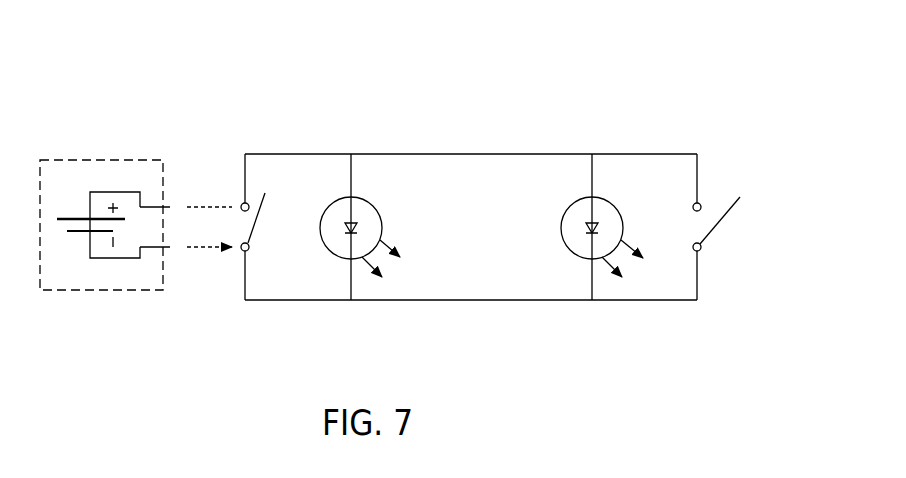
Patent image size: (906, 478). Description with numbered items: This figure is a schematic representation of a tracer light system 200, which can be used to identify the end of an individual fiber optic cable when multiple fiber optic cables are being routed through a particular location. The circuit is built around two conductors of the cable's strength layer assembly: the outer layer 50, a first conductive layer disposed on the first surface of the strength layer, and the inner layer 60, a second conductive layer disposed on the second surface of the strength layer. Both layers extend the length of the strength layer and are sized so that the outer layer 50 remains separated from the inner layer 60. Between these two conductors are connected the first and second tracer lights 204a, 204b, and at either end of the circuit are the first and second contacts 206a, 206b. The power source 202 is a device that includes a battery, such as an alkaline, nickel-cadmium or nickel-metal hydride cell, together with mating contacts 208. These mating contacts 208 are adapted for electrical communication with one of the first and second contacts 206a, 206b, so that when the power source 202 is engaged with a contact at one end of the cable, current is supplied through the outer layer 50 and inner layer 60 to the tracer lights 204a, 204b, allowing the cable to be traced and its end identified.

The tracer light system 200 is at (181, 106).
The outer layer 50 is at (452, 154).
The inner layer 60 is at (468, 300).
The power source 202 is at (98, 290).
The first tracer light 204a is at (378, 210).
The second tracer light 204b is at (622, 222).
The first contact 206a is at (272, 211).
The second contact 206b is at (702, 205).
The mating contacts 208 is at (170, 246).